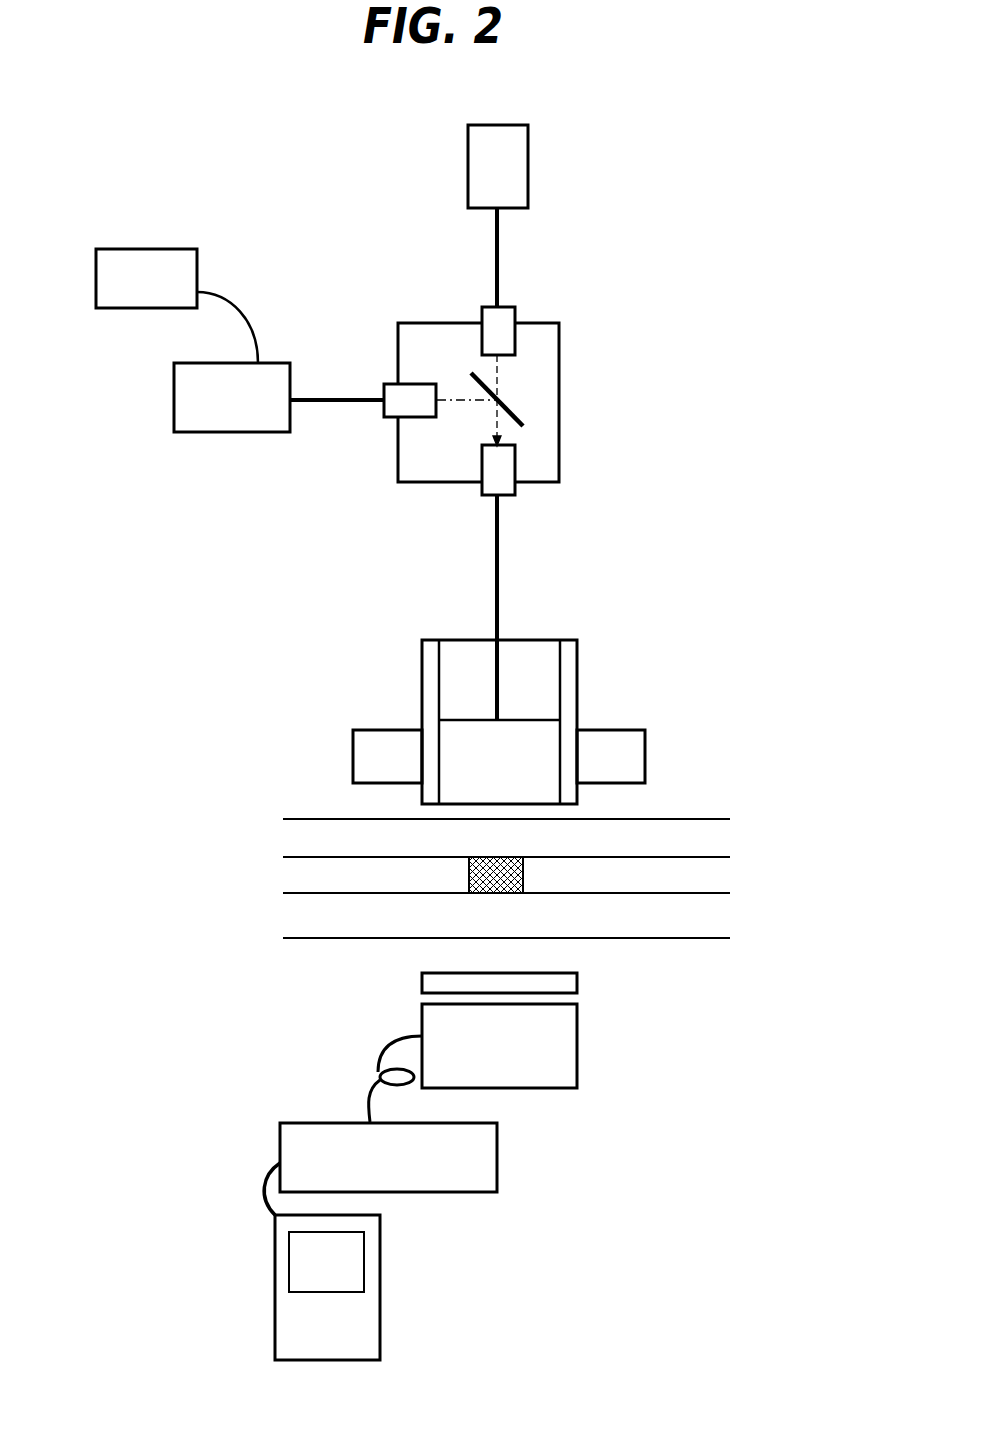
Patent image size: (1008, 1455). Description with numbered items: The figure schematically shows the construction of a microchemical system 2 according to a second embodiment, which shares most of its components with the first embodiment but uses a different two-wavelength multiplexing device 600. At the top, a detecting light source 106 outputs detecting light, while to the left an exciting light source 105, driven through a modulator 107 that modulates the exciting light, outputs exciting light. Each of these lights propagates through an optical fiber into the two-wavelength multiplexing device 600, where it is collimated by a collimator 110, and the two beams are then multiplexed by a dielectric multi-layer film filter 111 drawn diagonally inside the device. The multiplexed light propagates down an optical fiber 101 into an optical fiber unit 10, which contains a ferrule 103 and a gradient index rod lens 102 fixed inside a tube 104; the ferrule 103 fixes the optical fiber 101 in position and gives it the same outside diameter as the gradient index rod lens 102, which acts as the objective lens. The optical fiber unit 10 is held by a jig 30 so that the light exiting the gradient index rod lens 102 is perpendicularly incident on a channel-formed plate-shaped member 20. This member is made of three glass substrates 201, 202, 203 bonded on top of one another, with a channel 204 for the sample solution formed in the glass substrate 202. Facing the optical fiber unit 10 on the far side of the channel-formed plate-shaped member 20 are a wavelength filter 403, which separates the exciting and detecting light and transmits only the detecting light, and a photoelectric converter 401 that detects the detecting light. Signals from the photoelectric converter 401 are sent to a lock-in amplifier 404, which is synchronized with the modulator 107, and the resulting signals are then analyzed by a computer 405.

The microchemical system 2 is at (240, 578).
The optical fiber unit 10 is at (577, 655).
The channel-formed plate-shaped member 20 is at (692, 819).
The jig 30 is at (645, 752).
The optical fiber 101 is at (502, 595).
The gradient index rod lens 102 is at (537, 742).
The ferrule 103 is at (472, 668).
The tube 104 is at (427, 700).
The exciting light source 105 is at (180, 402).
The detecting light source 106 is at (520, 168).
The modulator 107 is at (135, 300).
The collimator 110 is at (516, 314).
The dielectric multi-layer film filter 111 is at (522, 412).
The glass substrate 201 is at (700, 843).
The glass substrate 202 is at (703, 877).
The glass substrate 203 is at (705, 917).
The channel 204 is at (500, 893).
The photoelectric converter 401 is at (568, 1035).
The wavelength filter 403 is at (570, 983).
The lock-in amplifier 404 is at (497, 1157).
The computer 405 is at (381, 1300).
The two-wavelength multiplexing device 600 is at (560, 357).